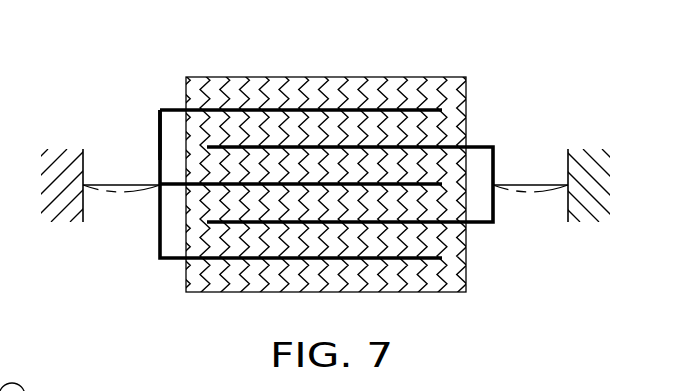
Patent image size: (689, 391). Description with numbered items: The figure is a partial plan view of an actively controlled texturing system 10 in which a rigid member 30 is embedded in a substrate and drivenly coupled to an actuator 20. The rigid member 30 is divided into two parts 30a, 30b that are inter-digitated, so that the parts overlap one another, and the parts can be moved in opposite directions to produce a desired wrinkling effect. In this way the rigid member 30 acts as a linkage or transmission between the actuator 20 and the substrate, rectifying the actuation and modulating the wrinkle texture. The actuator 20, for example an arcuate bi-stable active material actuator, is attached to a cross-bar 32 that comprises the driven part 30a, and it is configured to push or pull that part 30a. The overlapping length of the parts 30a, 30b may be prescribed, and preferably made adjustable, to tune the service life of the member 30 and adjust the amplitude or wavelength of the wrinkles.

The actively controlled texturing system 10 is at (304, 38).
The rigid member 30 is at (319, 183).
The driven part 30a is at (162, 91).
The second part of the rigid member 30b is at (476, 118).
The cross-bar 32 is at (160, 134).
The actuator 20 is at (142, 186).